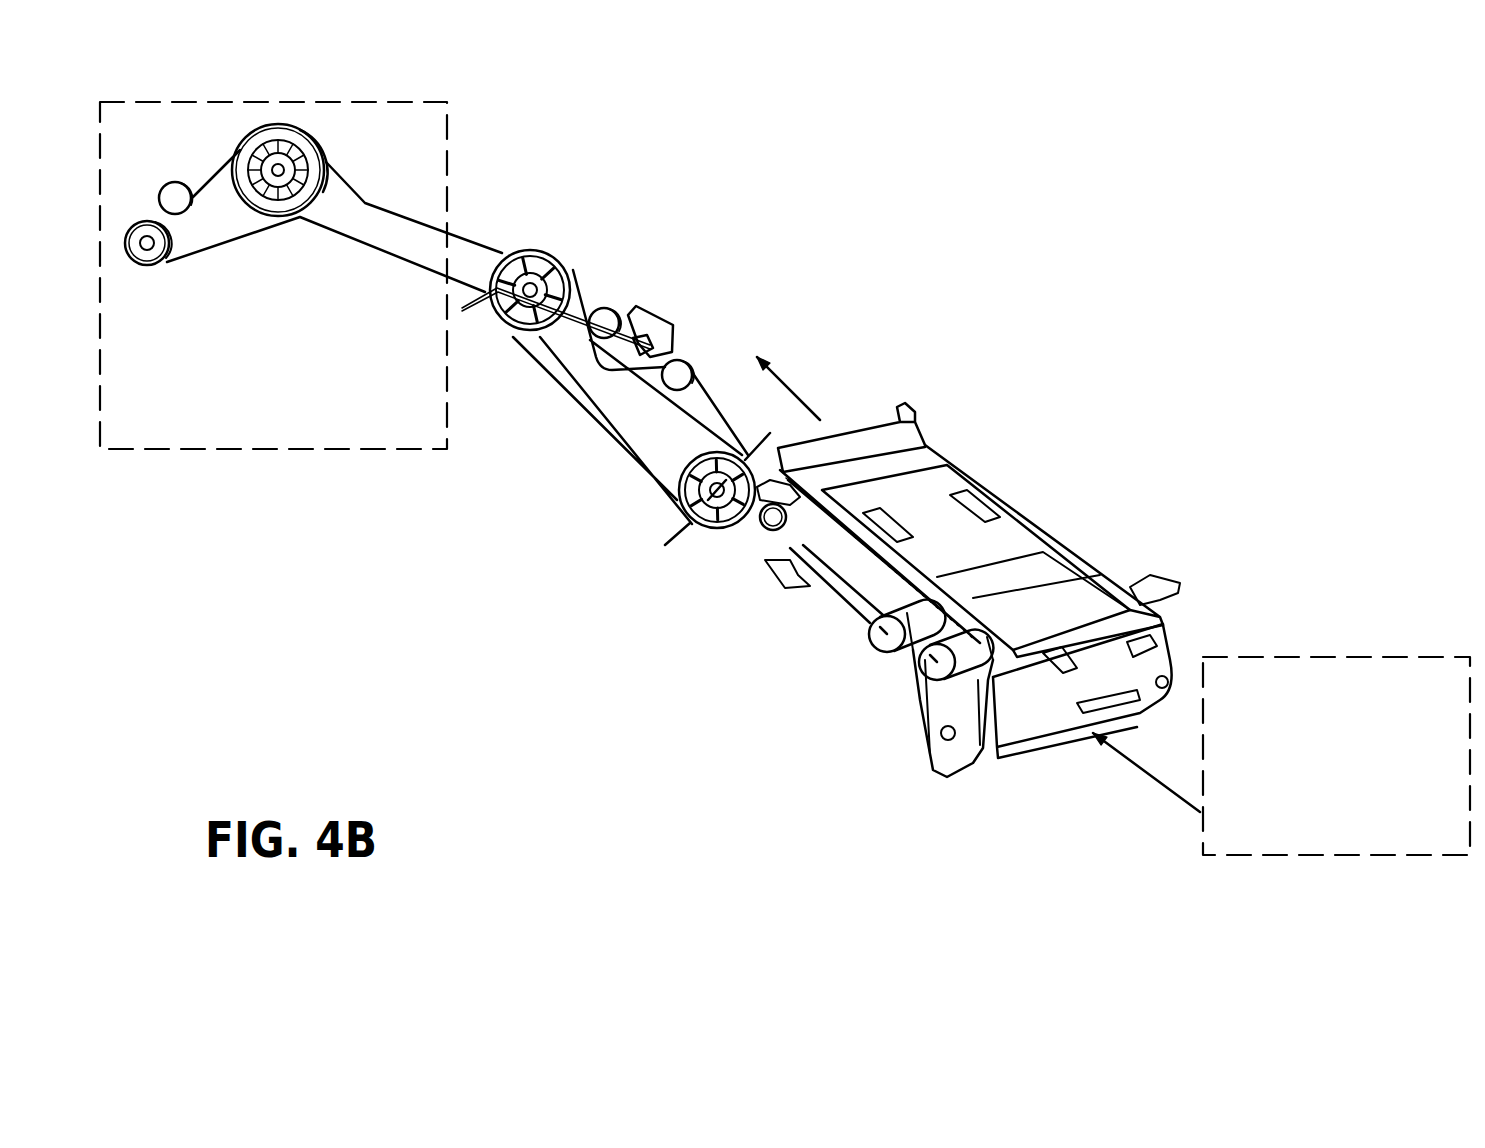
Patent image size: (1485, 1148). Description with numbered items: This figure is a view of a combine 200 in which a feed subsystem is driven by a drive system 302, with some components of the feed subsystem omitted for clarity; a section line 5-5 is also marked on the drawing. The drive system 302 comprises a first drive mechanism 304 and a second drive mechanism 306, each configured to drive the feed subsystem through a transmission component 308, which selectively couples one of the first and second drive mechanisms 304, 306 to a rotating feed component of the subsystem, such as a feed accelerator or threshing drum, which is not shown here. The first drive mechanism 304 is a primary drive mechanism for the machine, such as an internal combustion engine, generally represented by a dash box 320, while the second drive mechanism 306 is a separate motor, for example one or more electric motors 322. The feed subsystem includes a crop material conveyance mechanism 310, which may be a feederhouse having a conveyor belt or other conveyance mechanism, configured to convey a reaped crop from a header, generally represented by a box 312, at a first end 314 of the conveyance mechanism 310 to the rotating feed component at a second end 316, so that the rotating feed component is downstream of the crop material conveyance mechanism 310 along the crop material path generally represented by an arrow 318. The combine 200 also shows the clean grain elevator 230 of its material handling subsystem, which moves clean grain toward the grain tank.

The combine 200 is at (860, 185).
The clean grain elevator 230 is at (1090, 578).
The drive system 302 is at (535, 485).
The first drive mechanism 304 is at (555, 240).
The second drive mechanism 306 is at (810, 607).
The transmission component 308 is at (712, 537).
The crop material conveyance mechanism 310 is at (1047, 727).
The header 312 is at (1350, 655).
The first end 314 is at (1023, 750).
The second end 316 is at (873, 423).
The arrow 318 is at (800, 395).
The dash box 320 is at (255, 450).
The electric motors 322 is at (935, 662).
The section line 5- 5 is at (640, 523).